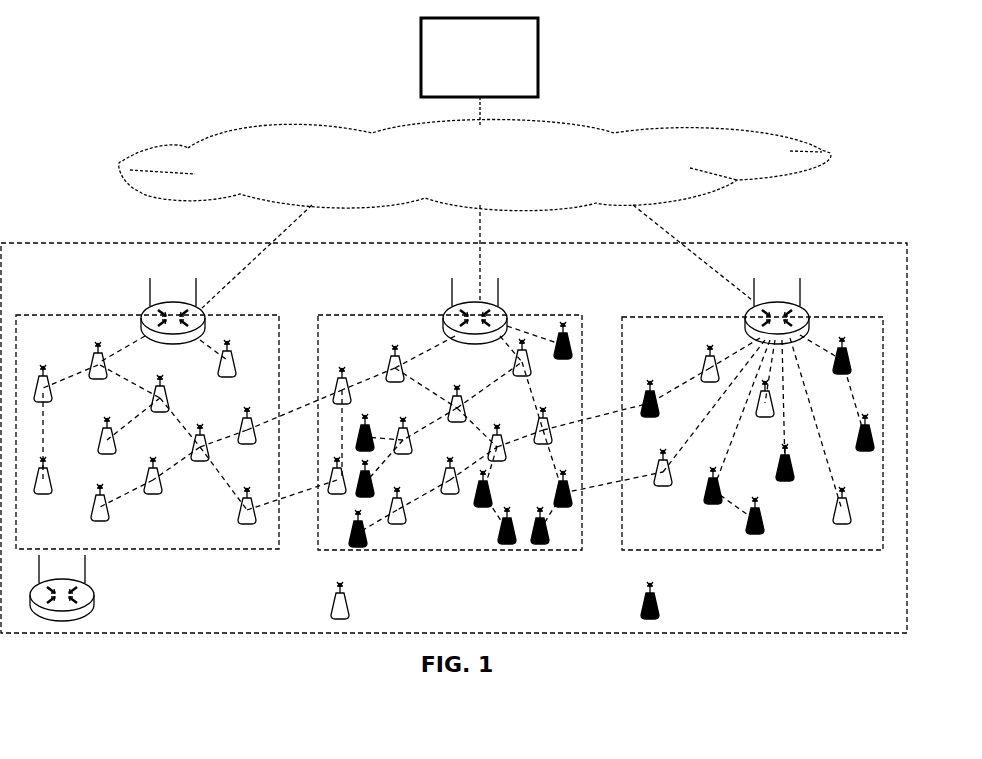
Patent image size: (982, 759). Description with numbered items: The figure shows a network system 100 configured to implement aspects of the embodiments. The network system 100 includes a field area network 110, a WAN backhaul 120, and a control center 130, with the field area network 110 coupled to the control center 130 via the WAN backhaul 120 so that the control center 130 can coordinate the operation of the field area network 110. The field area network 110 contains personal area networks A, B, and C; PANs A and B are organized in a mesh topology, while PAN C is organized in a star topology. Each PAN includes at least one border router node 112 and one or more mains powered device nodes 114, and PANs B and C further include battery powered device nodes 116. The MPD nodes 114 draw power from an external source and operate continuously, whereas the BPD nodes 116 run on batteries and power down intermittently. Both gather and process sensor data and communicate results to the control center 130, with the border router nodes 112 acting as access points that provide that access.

The network system 100 is at (796, 89).
The field area network 110 is at (454, 438).
The border router node 112 is at (94, 597).
The mains powered device node 114 is at (350, 600).
The battery powered device node 116 is at (660, 600).
The WAN backhaul 120 is at (475, 165).
The control center 130 is at (479, 57).